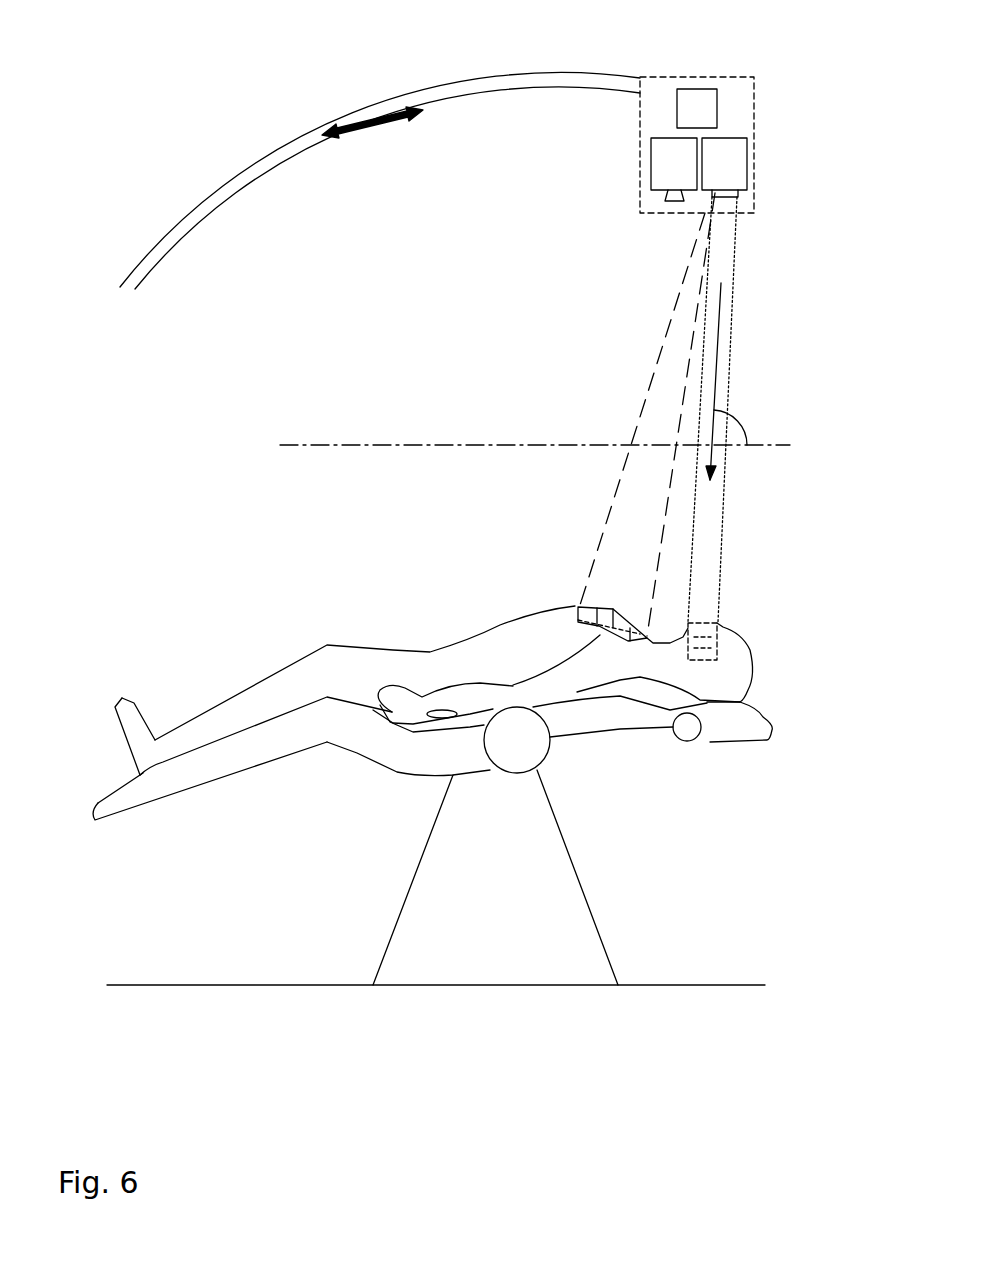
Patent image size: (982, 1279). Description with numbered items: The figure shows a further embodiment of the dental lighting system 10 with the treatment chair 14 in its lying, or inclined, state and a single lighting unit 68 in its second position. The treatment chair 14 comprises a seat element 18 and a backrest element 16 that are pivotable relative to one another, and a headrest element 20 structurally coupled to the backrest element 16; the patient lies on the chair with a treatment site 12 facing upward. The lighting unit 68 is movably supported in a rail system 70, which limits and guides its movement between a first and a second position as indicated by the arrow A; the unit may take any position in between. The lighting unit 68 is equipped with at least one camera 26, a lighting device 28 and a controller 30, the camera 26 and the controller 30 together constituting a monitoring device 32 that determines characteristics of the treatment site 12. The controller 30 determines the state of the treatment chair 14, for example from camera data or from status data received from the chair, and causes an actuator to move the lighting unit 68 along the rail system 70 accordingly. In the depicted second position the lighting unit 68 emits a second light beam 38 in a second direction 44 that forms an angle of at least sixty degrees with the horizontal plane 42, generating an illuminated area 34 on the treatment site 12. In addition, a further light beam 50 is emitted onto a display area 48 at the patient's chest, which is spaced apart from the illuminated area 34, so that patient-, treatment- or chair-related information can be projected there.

The dental lighting system 10 is at (460, 500).
The rail system 70 is at (380, 180).
The arrow A is at (372, 87).
The lighting unit 68 is at (650, 118).
The monitoring device 32 is at (510, 125).
The controller 30 is at (617, 124).
The camera 26 is at (607, 169).
The lighting device 28 is at (777, 179).
The further light beam 50 is at (636, 414).
The second light beam 38 is at (764, 409).
The second direction 44 is at (765, 381).
The horizontal plane 42 is at (517, 491).
The display area 48 is at (582, 591).
The treatment site 12 is at (493, 672).
The illuminated area 34 is at (780, 653).
The treatment chair 14 is at (472, 840).
The seat element 18 is at (218, 796).
The backrest element 16 is at (517, 756).
The headrest element 20 is at (762, 760).